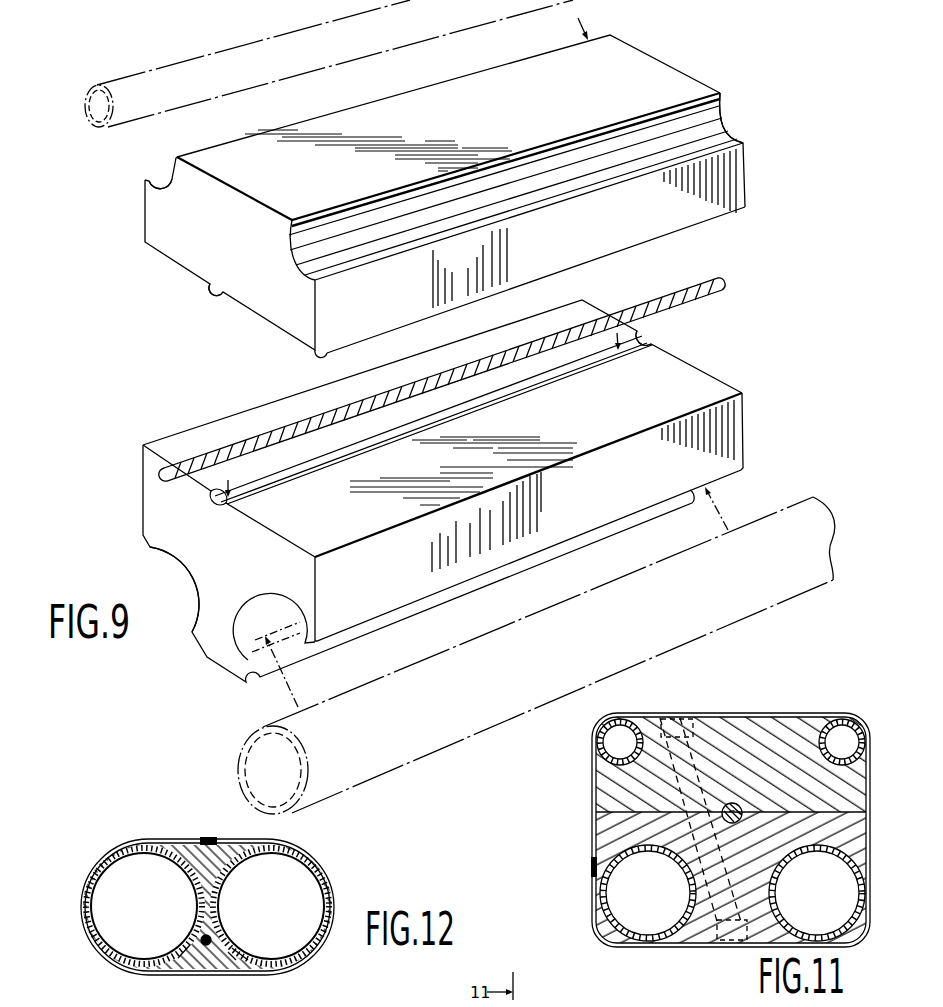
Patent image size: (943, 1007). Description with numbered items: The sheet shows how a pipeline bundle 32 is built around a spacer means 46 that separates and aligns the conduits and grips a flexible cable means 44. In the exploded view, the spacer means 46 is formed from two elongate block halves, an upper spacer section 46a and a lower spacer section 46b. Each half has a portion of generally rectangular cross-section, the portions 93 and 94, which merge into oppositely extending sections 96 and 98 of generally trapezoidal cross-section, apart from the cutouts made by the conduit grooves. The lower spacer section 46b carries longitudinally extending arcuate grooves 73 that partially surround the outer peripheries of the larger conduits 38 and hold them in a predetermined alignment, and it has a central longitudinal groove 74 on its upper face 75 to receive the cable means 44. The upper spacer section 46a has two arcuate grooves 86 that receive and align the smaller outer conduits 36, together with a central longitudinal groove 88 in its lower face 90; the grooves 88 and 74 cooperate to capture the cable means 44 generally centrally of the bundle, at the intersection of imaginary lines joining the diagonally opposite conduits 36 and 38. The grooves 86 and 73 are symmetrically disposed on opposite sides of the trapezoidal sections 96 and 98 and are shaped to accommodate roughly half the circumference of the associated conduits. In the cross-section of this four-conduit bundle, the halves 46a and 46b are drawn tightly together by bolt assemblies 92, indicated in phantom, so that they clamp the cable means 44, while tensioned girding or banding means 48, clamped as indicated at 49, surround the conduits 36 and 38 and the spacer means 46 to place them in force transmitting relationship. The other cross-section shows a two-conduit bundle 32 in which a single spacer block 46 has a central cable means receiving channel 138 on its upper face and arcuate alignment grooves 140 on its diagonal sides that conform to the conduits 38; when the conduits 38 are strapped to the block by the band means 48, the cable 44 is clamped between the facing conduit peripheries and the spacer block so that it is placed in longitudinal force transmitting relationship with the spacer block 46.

In FIG. 12, the bundle 32 is at (338, 866).
In FIG. 11, the bundle 32 is at (800, 706).
In FIG. 9, the conduits 36 is at (320, 61).
In FIG. 11, the conduits 36 is at (626, 720).
In FIG. 9, the conduits 38 is at (451, 709).
In FIG. 12, the conduits 38 is at (86, 902).
In FIG. 11, the conduits 38 is at (602, 916).
In FIG. 9, the cable means 44 is at (684, 306).
In FIG. 12, the cable means 44 is at (203, 934).
In FIG. 11, the cable means 44 is at (738, 808).
In FIG. 12, the spacer means 46 is at (220, 943).
In FIG. 9, the upper spacer section 46a is at (690, 58).
In FIG. 11, the upper spacer section 46a is at (779, 772).
In FIG. 9, the lower spacer section 46b is at (752, 375).
In FIG. 11, the lower spacer section 46b is at (769, 855).
In FIG. 12, the girding or banding means 48 is at (293, 847).
In FIG. 11, the girding or banding means 48 is at (748, 713).
In FIG. 12, the clamp 49 is at (205, 836).
In FIG. 11, the clamp 49 is at (582, 870).
In FIG. 9, the arcuate grooves 73 is at (197, 619).
In FIG. 9, the central longitudinal groove 74 is at (649, 344).
In FIG. 9, the upper face 75 is at (605, 419).
In FIG. 9, the arcuate grooves 86 is at (160, 178).
In FIG. 9, the central longitudinally extending groove 88 is at (217, 291).
In FIG. 9, the lower face 90 is at (318, 355).
In FIG. 11, the bolt assemblies 92 is at (700, 740).
In FIG. 9, the rectangular portion 93 is at (566, 254).
In FIG. 9, the rectangular portion 94 is at (611, 499).
In FIG. 9, the trapezoidal section 96 is at (229, 244).
In FIG. 9, the trapezoidal section 98 is at (238, 612).
In FIG. 12, the cable means receiving channel 138 is at (232, 958).
In FIG. 12, the alignment grooves 140 is at (176, 958).